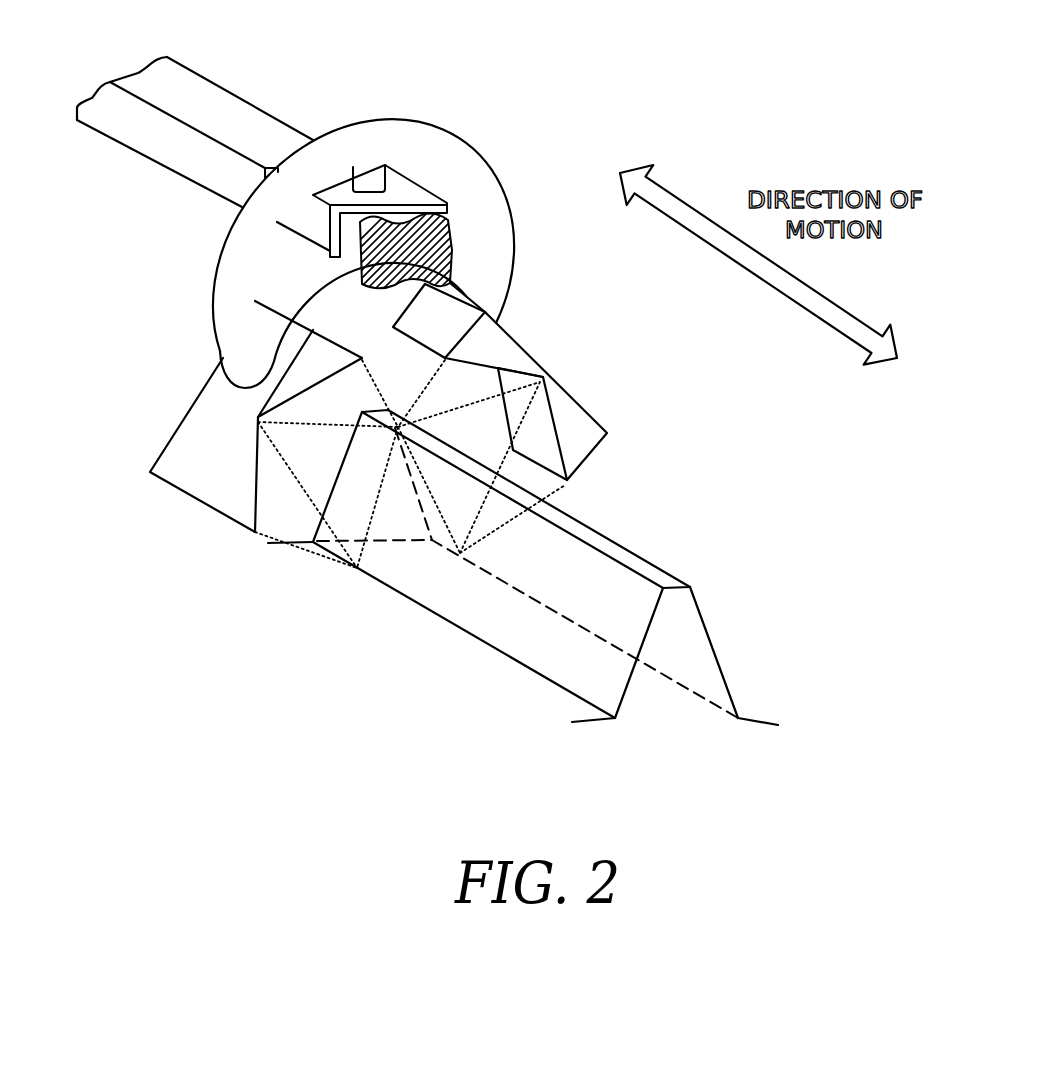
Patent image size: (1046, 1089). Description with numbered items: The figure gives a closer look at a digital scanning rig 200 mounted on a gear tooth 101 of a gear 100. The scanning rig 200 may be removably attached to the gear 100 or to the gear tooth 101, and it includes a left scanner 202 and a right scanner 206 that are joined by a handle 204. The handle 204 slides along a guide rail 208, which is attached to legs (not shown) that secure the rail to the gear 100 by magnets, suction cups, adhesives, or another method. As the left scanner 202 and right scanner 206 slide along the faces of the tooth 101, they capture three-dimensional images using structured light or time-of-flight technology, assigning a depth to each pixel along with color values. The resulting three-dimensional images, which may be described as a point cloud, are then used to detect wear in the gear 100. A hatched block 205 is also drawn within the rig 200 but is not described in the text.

The gear 100 is at (810, 638).
The gear tooth 101 is at (661, 577).
The scanning rig 200 is at (425, 98).
The left scanner 202 is at (170, 436).
The handle 204 is at (236, 250).
The insert block 205 is at (357, 284).
The right scanner 206 is at (587, 378).
The guide rail 208 is at (165, 152).